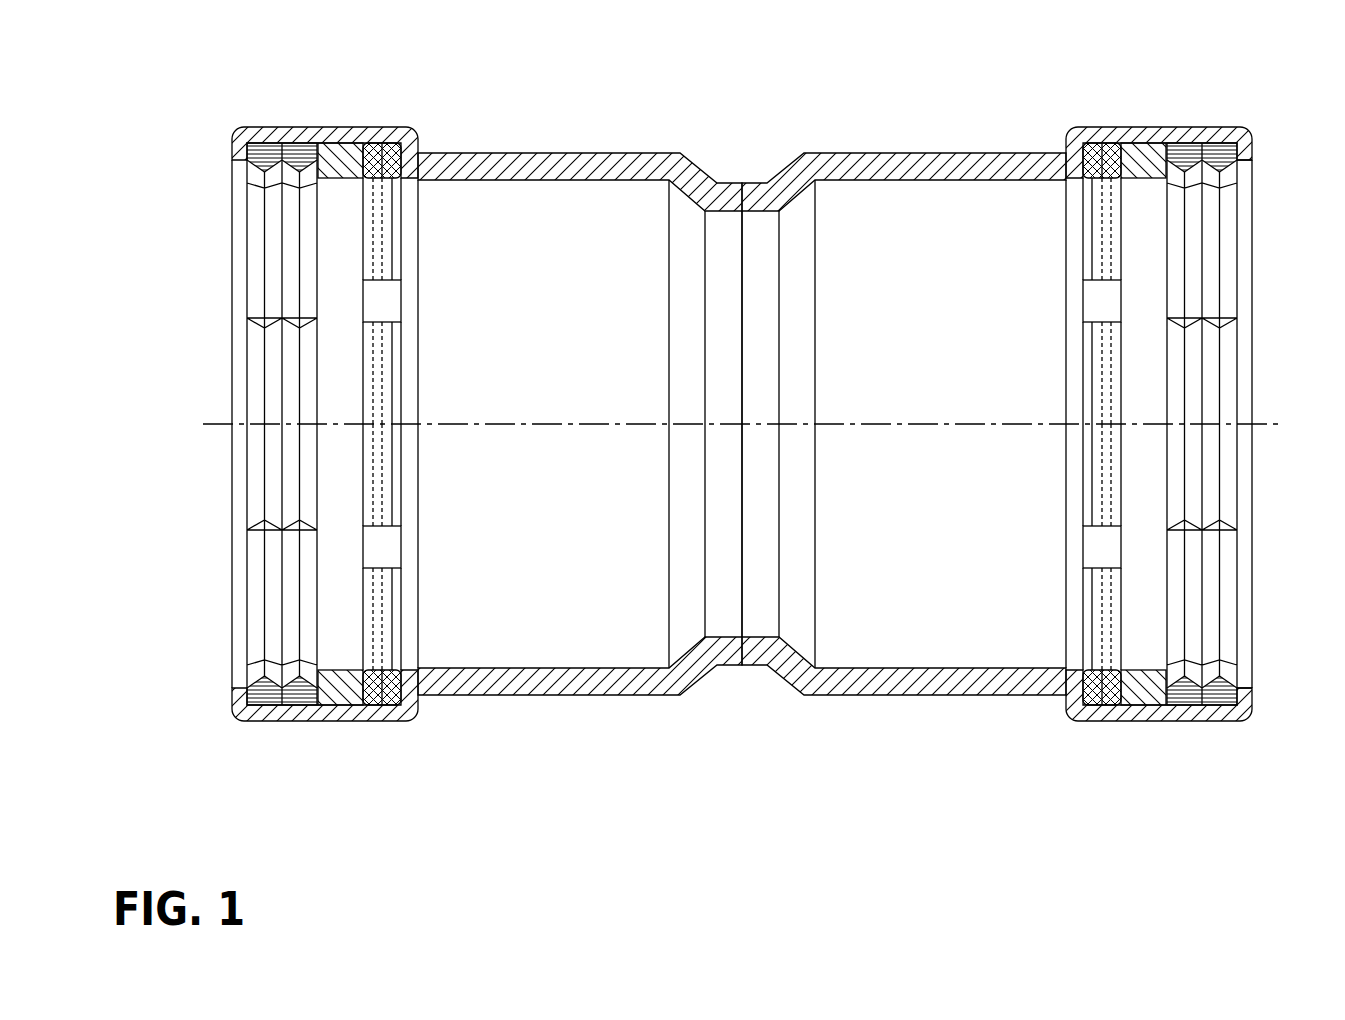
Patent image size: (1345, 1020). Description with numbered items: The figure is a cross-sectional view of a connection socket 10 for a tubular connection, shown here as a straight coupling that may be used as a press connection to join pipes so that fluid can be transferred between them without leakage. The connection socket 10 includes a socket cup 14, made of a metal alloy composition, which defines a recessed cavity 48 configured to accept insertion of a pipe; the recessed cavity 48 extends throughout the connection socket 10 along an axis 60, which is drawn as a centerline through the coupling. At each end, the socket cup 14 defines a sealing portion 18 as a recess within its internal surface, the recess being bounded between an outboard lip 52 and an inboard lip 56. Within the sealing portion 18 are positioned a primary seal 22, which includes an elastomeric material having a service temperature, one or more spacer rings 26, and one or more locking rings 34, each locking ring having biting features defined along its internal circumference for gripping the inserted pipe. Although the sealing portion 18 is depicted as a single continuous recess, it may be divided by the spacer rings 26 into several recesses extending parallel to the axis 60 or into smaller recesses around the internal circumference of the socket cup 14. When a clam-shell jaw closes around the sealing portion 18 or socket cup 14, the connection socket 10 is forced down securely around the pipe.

The connection socket 10 is at (576, 725).
The socket cup 14 is at (934, 152).
The sealing portion 18 is at (1158, 120).
The primary seal 22 is at (1093, 150).
The spacer rings 26 is at (1137, 143).
The locking rings 34 is at (1187, 147).
The recessed cavity 48 is at (1012, 294).
The outboard lip 52 is at (1252, 152).
The inboard lip 56 is at (1087, 156).
The axis 60 is at (1266, 422).